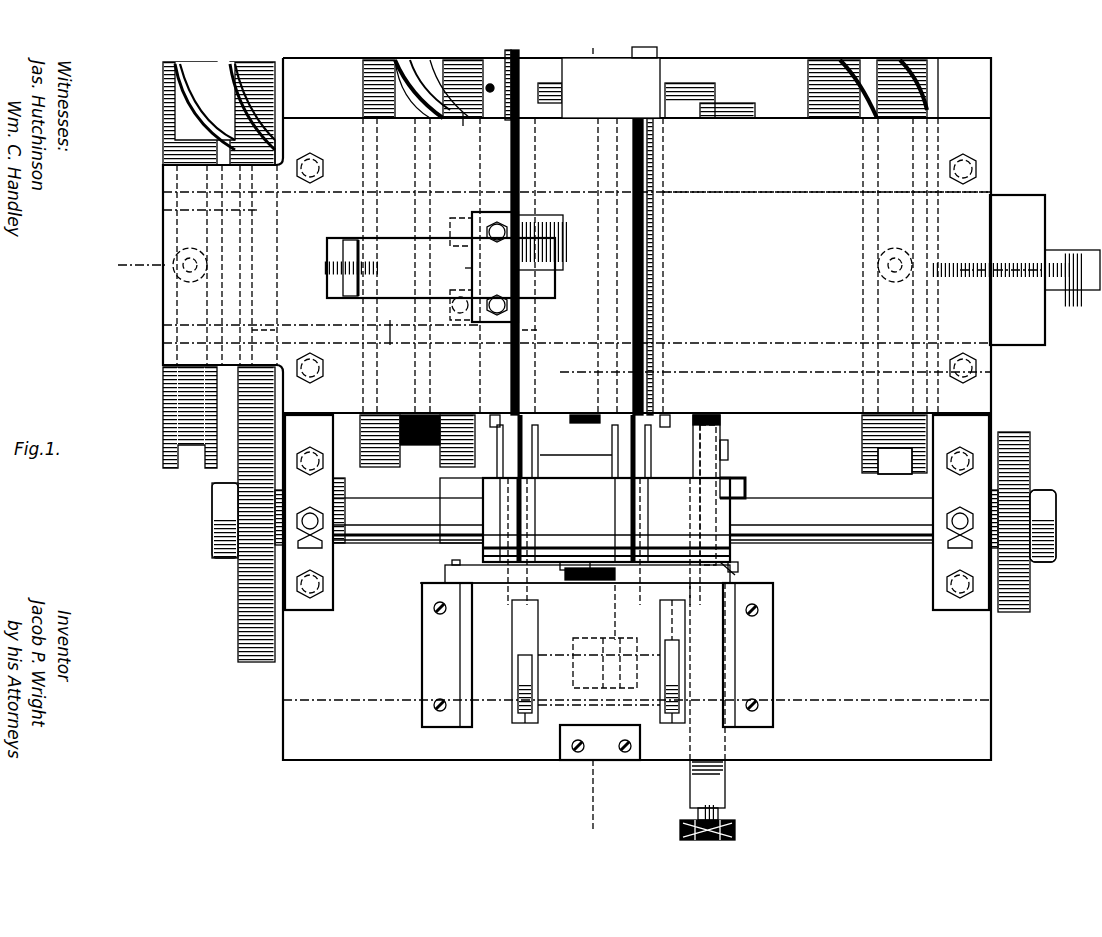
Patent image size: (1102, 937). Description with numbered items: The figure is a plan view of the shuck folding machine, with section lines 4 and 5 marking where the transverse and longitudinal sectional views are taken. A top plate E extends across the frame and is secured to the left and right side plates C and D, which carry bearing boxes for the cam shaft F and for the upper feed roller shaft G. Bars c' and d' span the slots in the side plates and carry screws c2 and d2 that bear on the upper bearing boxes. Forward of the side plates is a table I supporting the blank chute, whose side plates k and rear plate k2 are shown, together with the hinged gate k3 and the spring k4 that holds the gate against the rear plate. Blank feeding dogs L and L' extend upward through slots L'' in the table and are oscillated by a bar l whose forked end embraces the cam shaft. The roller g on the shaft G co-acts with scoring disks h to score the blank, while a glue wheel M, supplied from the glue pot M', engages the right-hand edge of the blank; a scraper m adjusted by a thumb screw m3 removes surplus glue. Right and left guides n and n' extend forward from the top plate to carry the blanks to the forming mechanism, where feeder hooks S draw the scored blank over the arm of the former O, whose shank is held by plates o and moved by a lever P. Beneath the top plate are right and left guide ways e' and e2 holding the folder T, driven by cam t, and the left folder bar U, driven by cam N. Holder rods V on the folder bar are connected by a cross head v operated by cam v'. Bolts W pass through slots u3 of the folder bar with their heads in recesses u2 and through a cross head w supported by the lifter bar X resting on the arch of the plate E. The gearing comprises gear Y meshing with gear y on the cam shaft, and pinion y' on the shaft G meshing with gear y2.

The section line 4— 4 is at (132, 266).
The section line 5— 5 is at (593, 431).
The top plate E is at (577, 409).
The table I is at (637, 671).
The cam v' is at (219, 265).
The gear y is at (264, 124).
The cam N is at (398, 70).
The cam plate Q is at (463, 126).
The former O is at (575, 182).
The left guide way e2 is at (493, 205).
The right guide way e' is at (827, 266).
The cam t is at (873, 266).
The lifter bar X is at (438, 268).
The bolts W is at (519, 267).
The cross head w is at (460, 268).
The rectangular recesses u2 is at (455, 232).
The slots u3 is at (451, 279).
The holder rods V is at (350, 195).
The cross head v is at (273, 312).
The folder T is at (615, 300).
The left folder bar U is at (520, 345).
The lever P is at (580, 413).
The plates o is at (495, 414).
The left side plate C is at (325, 425).
The screw c2 is at (312, 515).
The bar c' is at (310, 547).
The right side plate D is at (960, 430).
The screw d2 is at (962, 512).
The bar d' is at (960, 548).
The gear Y is at (236, 592).
The gear y2 is at (1030, 456).
The pinion y' is at (1045, 537).
The upper feed roller shaft G is at (440, 520).
The left guide n' is at (461, 508).
The roller g is at (606, 510).
The feeder hooks S is at (537, 428).
The scoring disks h is at (610, 457).
The glue wheel M is at (741, 490).
The right guide n is at (735, 456).
The glue pot M' is at (750, 482).
The scraper m is at (735, 568).
The thumb screw m3 is at (698, 814).
The rear plate k2 is at (575, 590).
The gate k3 is at (590, 560).
The spring k4 is at (605, 612).
The side plates k is at (470, 650).
The blank feeding dog L' is at (510, 661).
The blank feeding dog L is at (686, 661).
The bar l is at (669, 620).
The slots L'' is at (596, 732).
The cam shaft F is at (1072, 250).